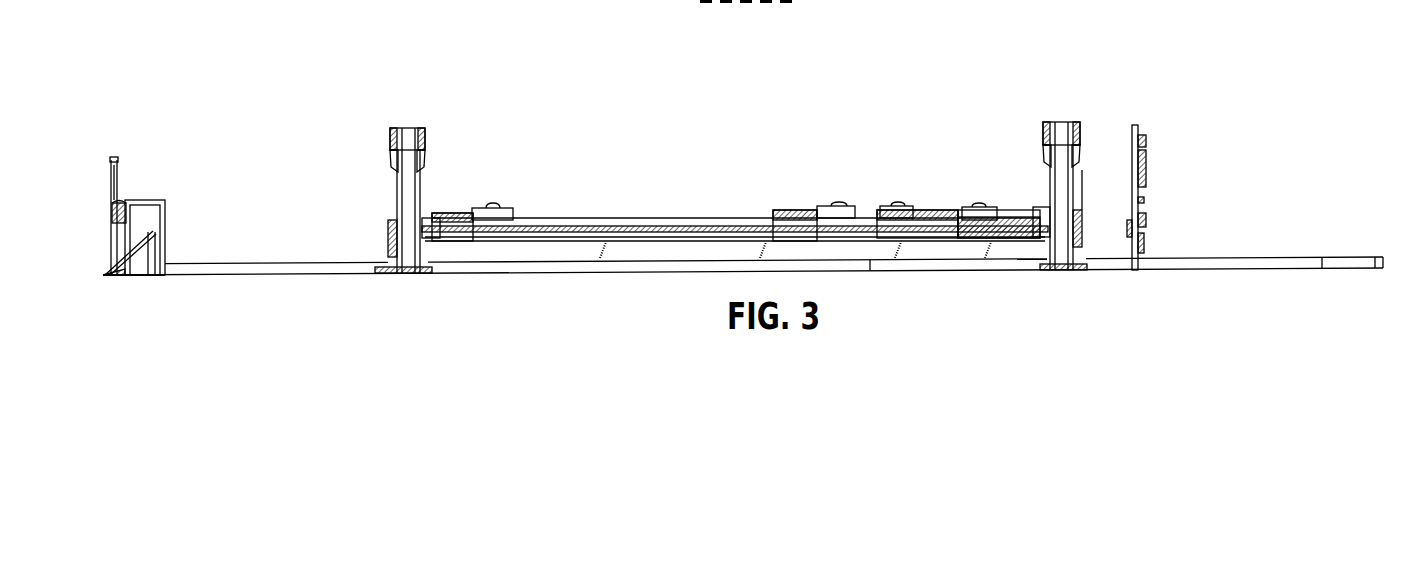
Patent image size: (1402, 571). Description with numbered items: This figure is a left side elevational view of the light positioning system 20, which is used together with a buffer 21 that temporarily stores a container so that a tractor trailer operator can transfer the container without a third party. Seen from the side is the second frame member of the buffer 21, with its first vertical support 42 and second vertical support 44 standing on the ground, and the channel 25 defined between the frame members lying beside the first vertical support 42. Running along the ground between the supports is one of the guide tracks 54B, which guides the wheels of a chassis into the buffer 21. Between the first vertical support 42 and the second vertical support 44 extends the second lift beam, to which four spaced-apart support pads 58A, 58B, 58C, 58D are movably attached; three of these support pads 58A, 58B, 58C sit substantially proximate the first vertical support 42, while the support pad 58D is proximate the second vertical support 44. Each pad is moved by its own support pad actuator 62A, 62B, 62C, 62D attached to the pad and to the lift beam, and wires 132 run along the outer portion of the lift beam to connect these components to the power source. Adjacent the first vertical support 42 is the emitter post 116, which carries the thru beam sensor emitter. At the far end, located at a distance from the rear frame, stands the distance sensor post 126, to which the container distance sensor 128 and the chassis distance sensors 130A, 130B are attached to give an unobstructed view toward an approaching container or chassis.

The light positioning system 20 is at (1197, 76).
The buffer 21 is at (411, 312).
The channel 25 is at (1090, 184).
The first vertical support 42 is at (1060, 124).
The second vertical support 44 is at (407, 130).
The guide track 54B is at (1223, 262).
The support pad 58A is at (1028, 242).
The support pad 58B is at (940, 242).
The support pad 58C is at (790, 212).
The support pad 58D is at (442, 214).
The support pad actuator 62A is at (968, 196).
The support pad actuator 62B is at (892, 190).
The support pad actuator 62C is at (819, 192).
The support pad actuator 62D is at (487, 187).
The emitter post 116 is at (1132, 127).
The distance sensor post 126 is at (113, 158).
The container distance sensor 128 is at (124, 172).
The chassis distance sensor 130A is at (127, 205).
The chassis distance sensor 130B is at (160, 226).
The wires 132 is at (658, 226).